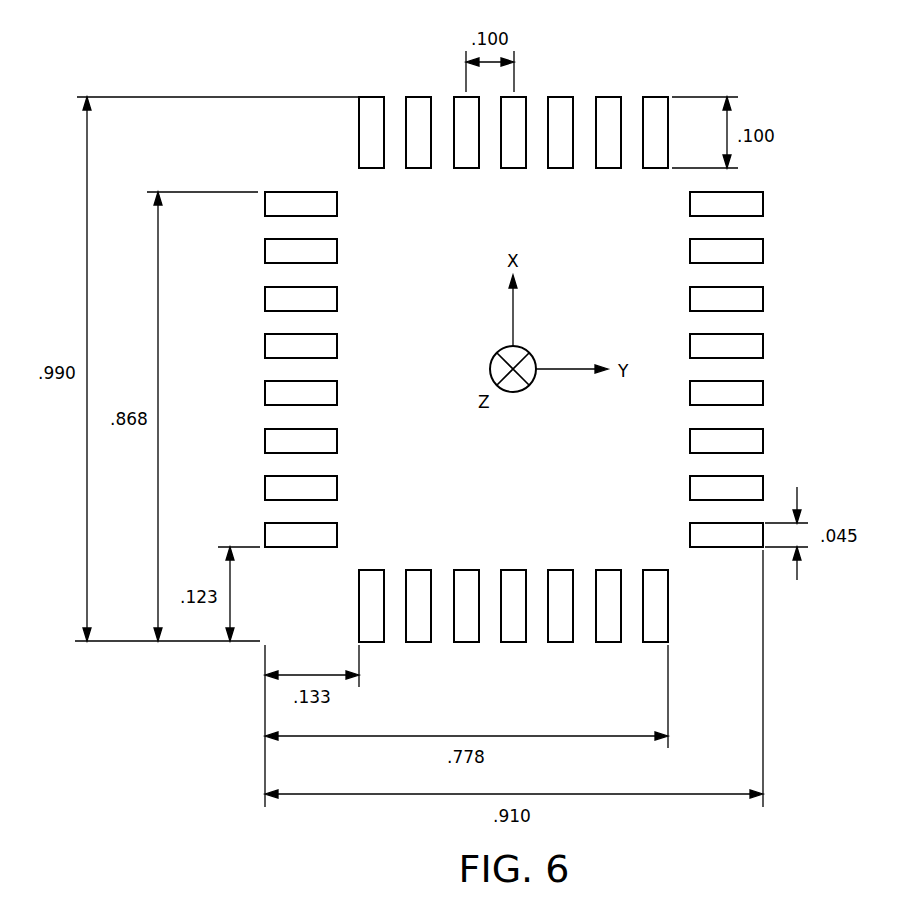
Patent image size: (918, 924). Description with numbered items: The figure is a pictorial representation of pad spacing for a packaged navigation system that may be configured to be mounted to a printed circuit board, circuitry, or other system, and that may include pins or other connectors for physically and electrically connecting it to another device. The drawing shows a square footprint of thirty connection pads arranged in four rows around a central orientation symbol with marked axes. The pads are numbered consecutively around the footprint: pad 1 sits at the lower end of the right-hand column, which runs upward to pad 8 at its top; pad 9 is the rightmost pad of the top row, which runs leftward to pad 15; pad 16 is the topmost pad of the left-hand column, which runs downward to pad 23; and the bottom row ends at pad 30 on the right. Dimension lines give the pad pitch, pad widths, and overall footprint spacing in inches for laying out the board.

The pad 1 is at (726, 549).
The pad 8 is at (728, 190).
The pad 9 is at (667, 132).
The pad 15 is at (358, 132).
The pad 16 is at (301, 191).
The pad 23 is at (301, 549).
The pad 30 is at (669, 606).